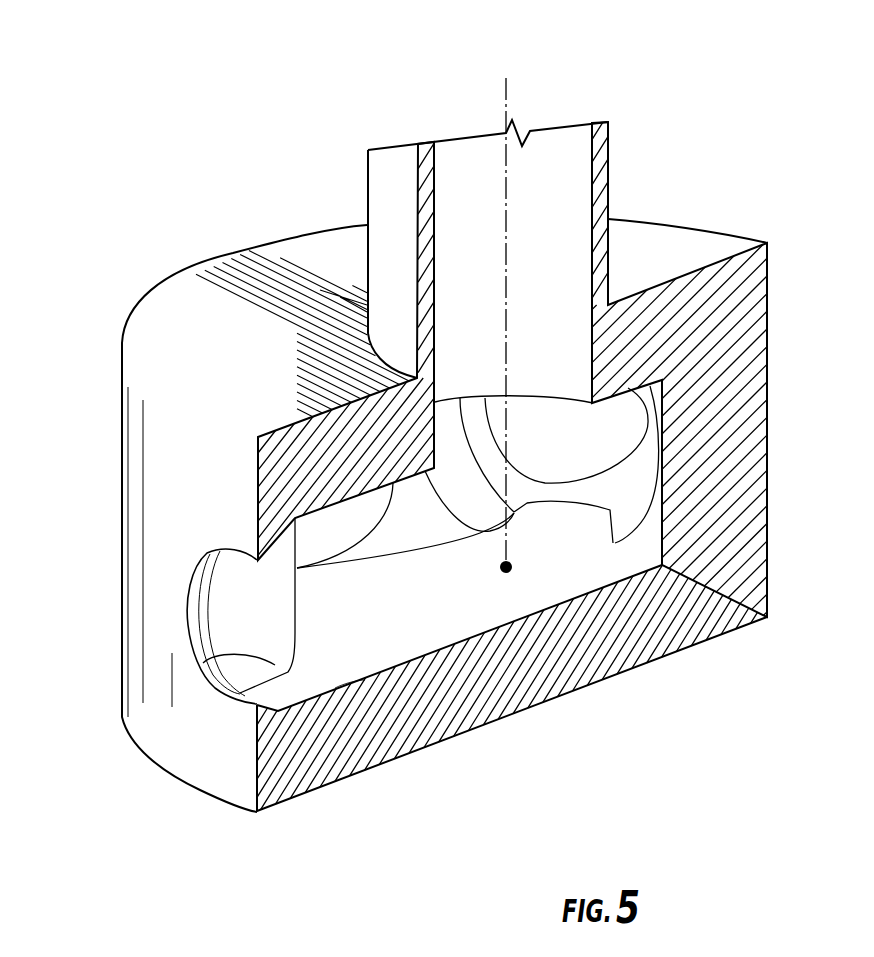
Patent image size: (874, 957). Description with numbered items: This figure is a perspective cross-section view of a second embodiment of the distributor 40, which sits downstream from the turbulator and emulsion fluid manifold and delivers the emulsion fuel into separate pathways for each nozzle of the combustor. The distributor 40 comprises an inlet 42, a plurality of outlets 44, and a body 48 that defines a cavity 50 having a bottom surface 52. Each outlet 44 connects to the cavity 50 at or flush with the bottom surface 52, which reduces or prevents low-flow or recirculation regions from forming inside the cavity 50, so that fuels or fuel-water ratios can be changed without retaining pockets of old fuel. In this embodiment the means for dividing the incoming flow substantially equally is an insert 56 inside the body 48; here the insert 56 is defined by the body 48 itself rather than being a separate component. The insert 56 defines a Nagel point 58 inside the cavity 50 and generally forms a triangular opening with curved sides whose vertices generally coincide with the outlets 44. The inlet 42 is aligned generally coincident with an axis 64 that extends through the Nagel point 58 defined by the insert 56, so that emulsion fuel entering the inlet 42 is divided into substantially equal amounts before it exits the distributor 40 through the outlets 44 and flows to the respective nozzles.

The distributor 40 is at (765, 171).
The inlet 42 is at (564, 121).
The outlet 44 is at (275, 665).
The body 48 is at (121, 437).
The cavity 50 is at (545, 516).
The bottom surface 52 is at (365, 680).
The insert 56 is at (427, 567).
The Nagel point 58 is at (512, 569).
The axis 64 is at (506, 162).